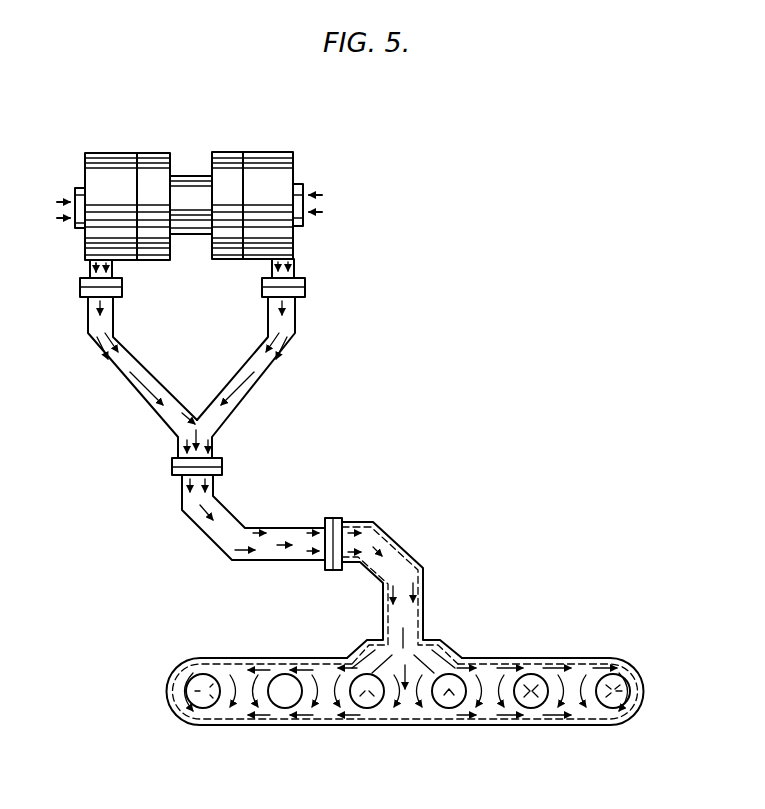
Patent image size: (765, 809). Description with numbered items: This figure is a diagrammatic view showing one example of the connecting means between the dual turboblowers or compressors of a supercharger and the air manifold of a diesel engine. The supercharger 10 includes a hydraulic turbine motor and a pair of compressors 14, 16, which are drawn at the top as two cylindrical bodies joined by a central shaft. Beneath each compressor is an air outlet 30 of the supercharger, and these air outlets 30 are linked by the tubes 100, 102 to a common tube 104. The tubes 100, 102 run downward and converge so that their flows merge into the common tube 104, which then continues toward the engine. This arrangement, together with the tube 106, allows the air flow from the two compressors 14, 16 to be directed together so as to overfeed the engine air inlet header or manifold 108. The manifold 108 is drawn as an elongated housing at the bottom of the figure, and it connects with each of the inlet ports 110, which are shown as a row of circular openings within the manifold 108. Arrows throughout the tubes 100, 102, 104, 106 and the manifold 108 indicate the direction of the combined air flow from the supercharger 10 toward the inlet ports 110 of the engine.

The supercharger 10 is at (193, 149).
The compressor 14 is at (113, 153).
The compressor 16 is at (263, 167).
The air outlet 30 is at (89, 271).
The tube 100 is at (88, 348).
The tube 102 is at (296, 326).
The common tube 104 is at (288, 528).
The tube 106 is at (424, 612).
The air inlet manifold 108 is at (393, 726).
The inlet port 110 is at (284, 706).